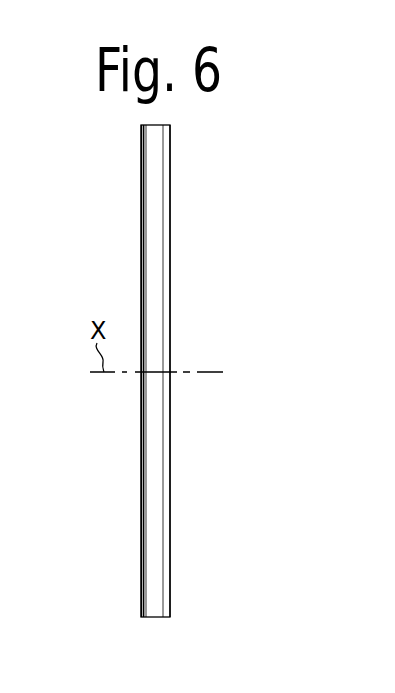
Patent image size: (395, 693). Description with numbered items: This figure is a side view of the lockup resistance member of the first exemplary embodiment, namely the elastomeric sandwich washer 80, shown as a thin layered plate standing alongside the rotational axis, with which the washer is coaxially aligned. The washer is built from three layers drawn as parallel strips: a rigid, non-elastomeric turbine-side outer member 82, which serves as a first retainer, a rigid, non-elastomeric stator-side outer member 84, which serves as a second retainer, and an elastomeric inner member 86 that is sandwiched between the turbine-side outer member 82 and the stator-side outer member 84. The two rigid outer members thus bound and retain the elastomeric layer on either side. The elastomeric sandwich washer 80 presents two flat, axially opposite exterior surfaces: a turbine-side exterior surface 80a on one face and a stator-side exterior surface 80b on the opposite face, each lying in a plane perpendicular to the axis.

The elastomeric sandwich washer 80 is at (226, 300).
The turbine-side exterior surface 80a is at (170, 205).
The stator-side exterior surface 80b is at (141, 262).
The turbine-side outer member 82 is at (170, 556).
The stator-side outer member 84 is at (141, 159).
The elastomeric inner member 86 is at (157, 457).